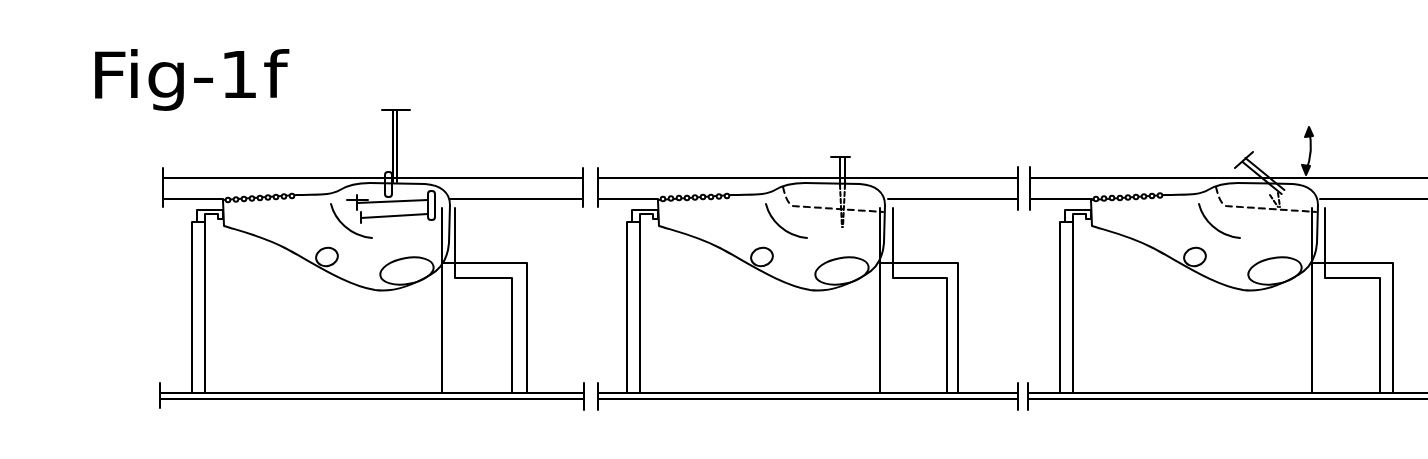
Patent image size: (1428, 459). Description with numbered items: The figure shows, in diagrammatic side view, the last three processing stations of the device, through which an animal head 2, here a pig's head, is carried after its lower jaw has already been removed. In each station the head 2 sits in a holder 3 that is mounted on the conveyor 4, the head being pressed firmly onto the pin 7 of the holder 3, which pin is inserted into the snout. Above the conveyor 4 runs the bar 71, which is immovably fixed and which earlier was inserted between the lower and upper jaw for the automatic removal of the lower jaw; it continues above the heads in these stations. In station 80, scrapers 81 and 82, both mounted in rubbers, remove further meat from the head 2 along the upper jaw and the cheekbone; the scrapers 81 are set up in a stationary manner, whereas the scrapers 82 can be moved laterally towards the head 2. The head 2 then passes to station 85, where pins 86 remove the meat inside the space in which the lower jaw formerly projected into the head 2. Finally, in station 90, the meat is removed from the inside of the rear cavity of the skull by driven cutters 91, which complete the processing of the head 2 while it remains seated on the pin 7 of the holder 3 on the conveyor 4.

The animal head 2 is at (366, 272).
The holder 3 is at (180, 305).
The conveyor 4 is at (490, 400).
The pin 7 is at (198, 228).
The bar 71 is at (198, 180).
The station 80 is at (358, 150).
The scrapers 81 is at (396, 180).
The scrapers 82 is at (440, 195).
The station 85 is at (750, 155).
The pins 86 is at (850, 165).
The station 90 is at (1187, 148).
The driven cutters 91 is at (1257, 158).